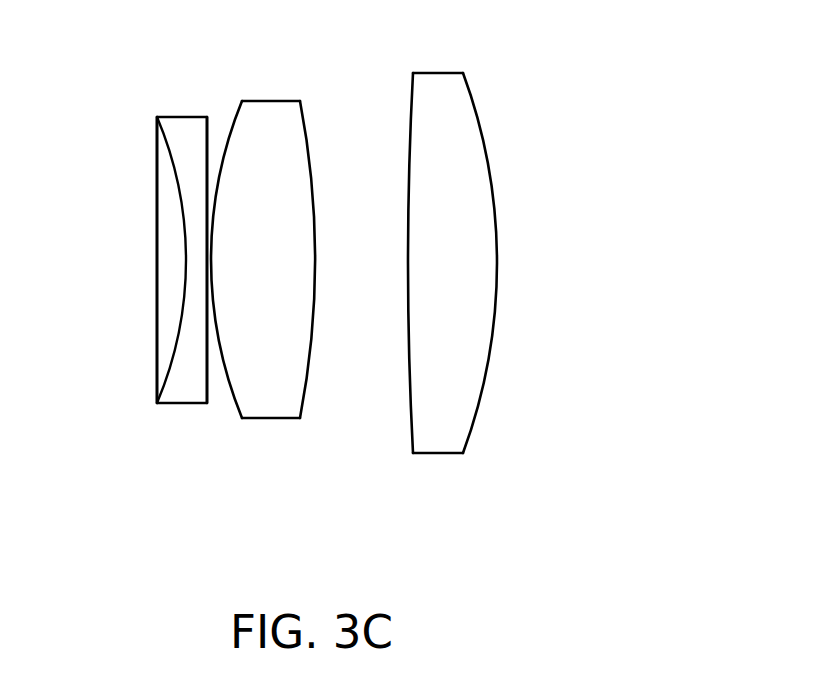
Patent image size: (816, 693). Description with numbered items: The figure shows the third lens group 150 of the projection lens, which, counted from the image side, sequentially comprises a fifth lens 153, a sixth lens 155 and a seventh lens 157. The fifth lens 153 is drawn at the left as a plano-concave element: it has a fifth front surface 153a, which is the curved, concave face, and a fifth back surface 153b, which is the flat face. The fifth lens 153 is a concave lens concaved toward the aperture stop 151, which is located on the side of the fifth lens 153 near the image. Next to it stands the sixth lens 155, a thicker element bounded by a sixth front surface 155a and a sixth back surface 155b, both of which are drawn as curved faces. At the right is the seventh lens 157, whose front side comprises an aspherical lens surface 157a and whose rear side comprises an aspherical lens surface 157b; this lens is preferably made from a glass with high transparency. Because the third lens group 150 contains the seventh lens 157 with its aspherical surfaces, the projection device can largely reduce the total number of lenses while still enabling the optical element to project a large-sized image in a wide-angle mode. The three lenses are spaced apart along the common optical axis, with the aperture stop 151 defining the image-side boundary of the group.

The third lens group 150 is at (385, 317).
The aperture stop 151 is at (157, 352).
The fifth lens 153 is at (173, 216).
The fifth front surface 153a is at (166, 161).
The fifth back surface 153b is at (218, 115).
The sixth lens 155 is at (278, 319).
The sixth front surface 155a is at (225, 415).
The sixth back surface 155b is at (311, 408).
The seventh lens 157 is at (535, 293).
The aspherical lens surface 157a is at (404, 429).
The aspherical lens surface 157b is at (492, 402).